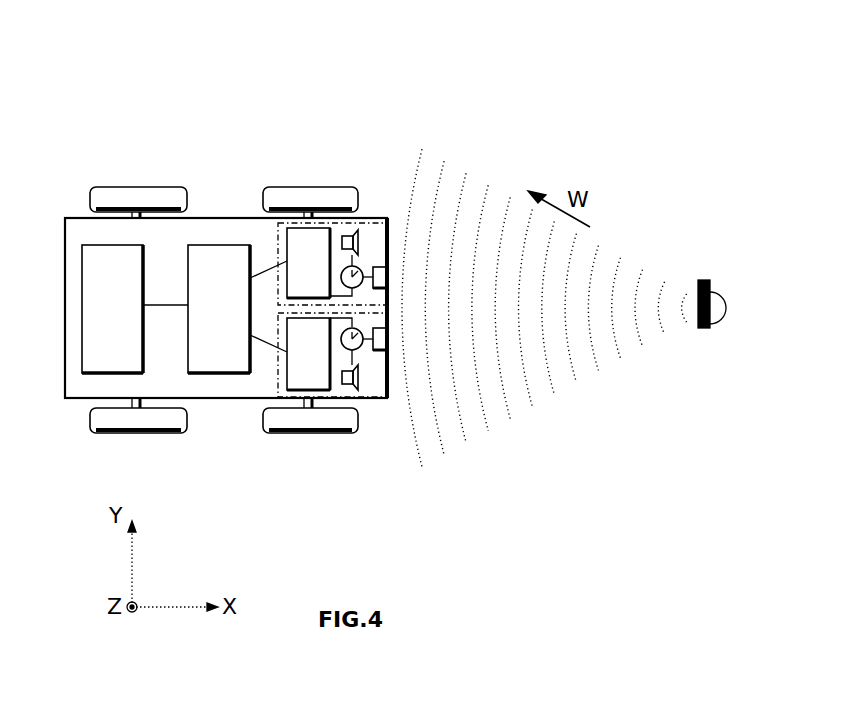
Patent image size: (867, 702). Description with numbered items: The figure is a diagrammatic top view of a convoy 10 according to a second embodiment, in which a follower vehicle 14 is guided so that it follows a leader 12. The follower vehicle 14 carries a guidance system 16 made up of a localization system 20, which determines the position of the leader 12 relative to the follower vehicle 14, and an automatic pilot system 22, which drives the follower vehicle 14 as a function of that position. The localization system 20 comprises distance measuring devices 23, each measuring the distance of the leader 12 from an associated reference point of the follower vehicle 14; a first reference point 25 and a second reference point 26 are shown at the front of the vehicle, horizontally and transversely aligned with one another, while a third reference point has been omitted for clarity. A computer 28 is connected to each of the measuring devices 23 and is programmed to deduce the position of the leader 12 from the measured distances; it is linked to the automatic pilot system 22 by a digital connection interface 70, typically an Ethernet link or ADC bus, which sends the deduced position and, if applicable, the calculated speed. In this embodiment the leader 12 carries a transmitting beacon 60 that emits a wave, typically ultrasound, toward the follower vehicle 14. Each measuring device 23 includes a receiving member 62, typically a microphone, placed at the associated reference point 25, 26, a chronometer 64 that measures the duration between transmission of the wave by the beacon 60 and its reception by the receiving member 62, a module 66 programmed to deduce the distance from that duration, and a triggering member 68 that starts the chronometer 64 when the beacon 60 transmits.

The convoy 10 is at (420, 86).
The leader 12 is at (729, 315).
The follower vehicle 14 is at (236, 118).
The guidance system 16 is at (213, 217).
The localization system 20 is at (258, 399).
The automatic pilot system 22 is at (85, 381).
The distance measuring devices 23 is at (362, 206).
The first reference point 25 is at (389, 227).
The second reference point 26 is at (389, 396).
The computer 28 is at (237, 309).
The transmitting beacon 60 is at (705, 332).
The receiving member 62 is at (378, 240).
The chronometer 64 is at (361, 289).
The module 66 is at (319, 309).
The triggering member 68 is at (388, 278).
The digital connection interface 70 is at (167, 304).